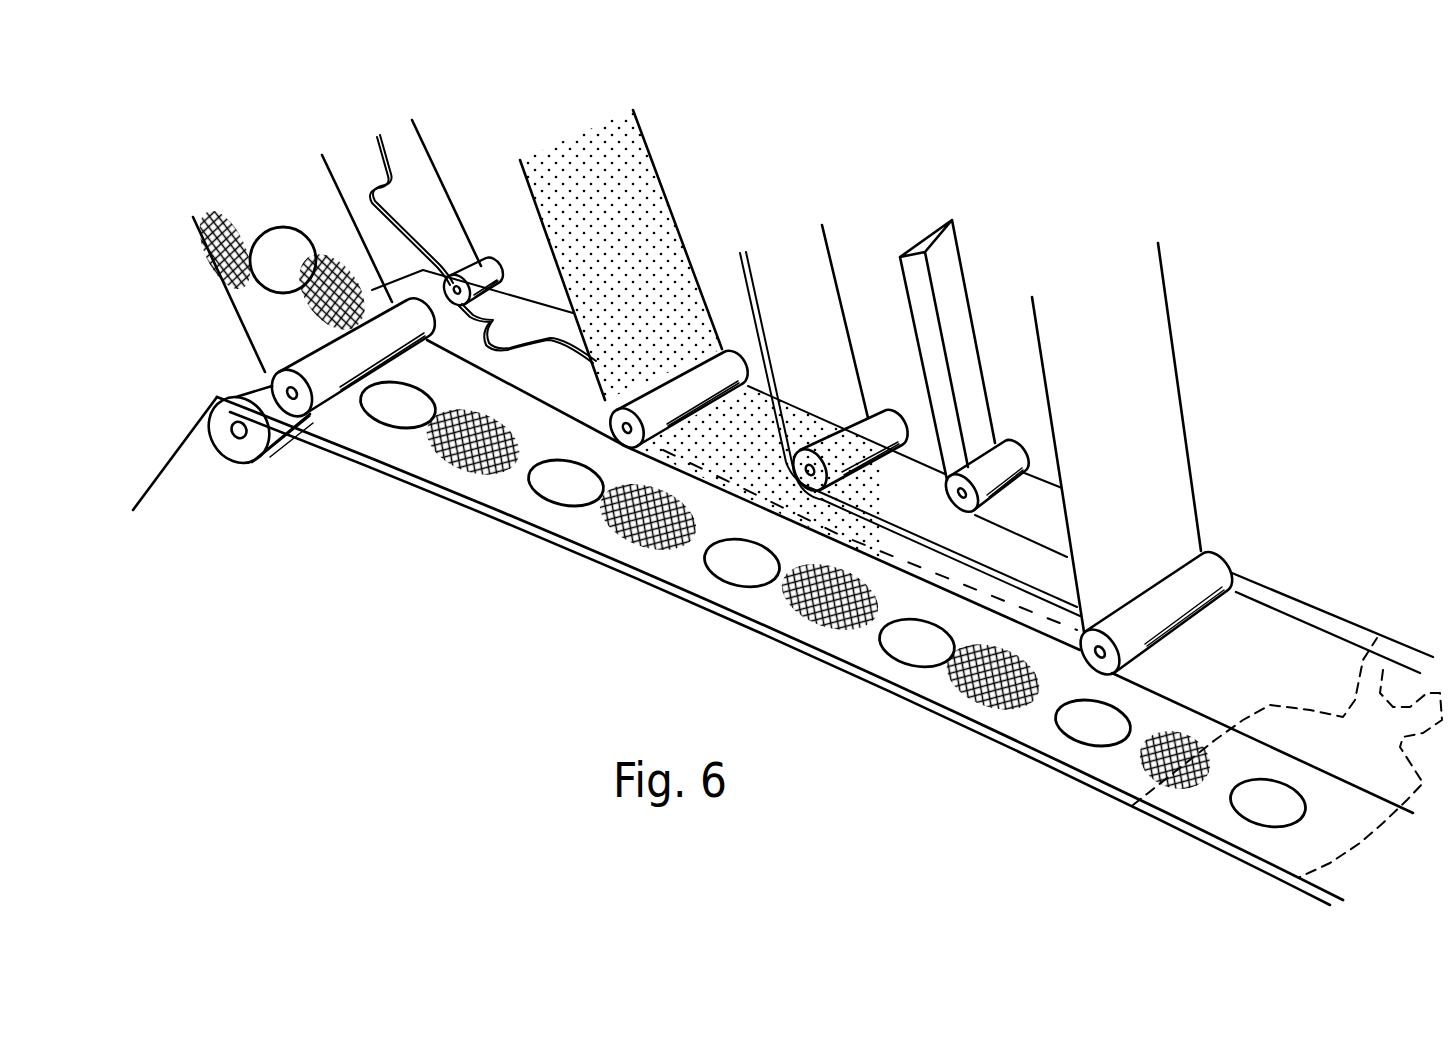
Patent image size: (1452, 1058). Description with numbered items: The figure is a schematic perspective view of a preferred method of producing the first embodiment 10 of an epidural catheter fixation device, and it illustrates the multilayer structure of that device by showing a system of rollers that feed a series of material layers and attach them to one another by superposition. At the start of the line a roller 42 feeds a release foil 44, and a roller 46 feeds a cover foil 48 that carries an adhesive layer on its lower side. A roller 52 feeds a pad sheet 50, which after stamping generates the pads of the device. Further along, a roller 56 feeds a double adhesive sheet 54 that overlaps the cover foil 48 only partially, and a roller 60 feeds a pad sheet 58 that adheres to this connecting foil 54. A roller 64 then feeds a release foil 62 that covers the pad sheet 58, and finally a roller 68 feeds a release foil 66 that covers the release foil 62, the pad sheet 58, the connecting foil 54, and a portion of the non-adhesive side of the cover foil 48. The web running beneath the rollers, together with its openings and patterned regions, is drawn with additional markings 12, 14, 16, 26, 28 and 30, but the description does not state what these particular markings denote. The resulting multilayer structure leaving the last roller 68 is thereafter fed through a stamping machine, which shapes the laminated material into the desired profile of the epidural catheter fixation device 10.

The first embodiment of an epidural catheter fixation device 10 is at (1332, 727).
The web surface 12 is at (663, 565).
The adhesive deposit 14 is at (752, 475).
The web 16 is at (383, 462).
The cross-hatched patches 26 is at (1200, 680).
The strip 28 is at (1040, 530).
The apertures 30 is at (567, 493).
The roller 42 is at (252, 462).
The release foil 44 is at (165, 457).
The roller 46 is at (263, 374).
The cover foil 48 is at (212, 256).
The pad sheet 50 is at (420, 157).
The roller 52 is at (493, 270).
The double adhesive sheet 54 is at (647, 182).
The roller 56 is at (740, 347).
The pad sheet 58 is at (820, 273).
The roller 60 is at (877, 430).
The release foil 62 is at (953, 273).
The roller 64 is at (1008, 457).
The release foil 66 is at (1167, 370).
The roller 68 is at (1222, 568).